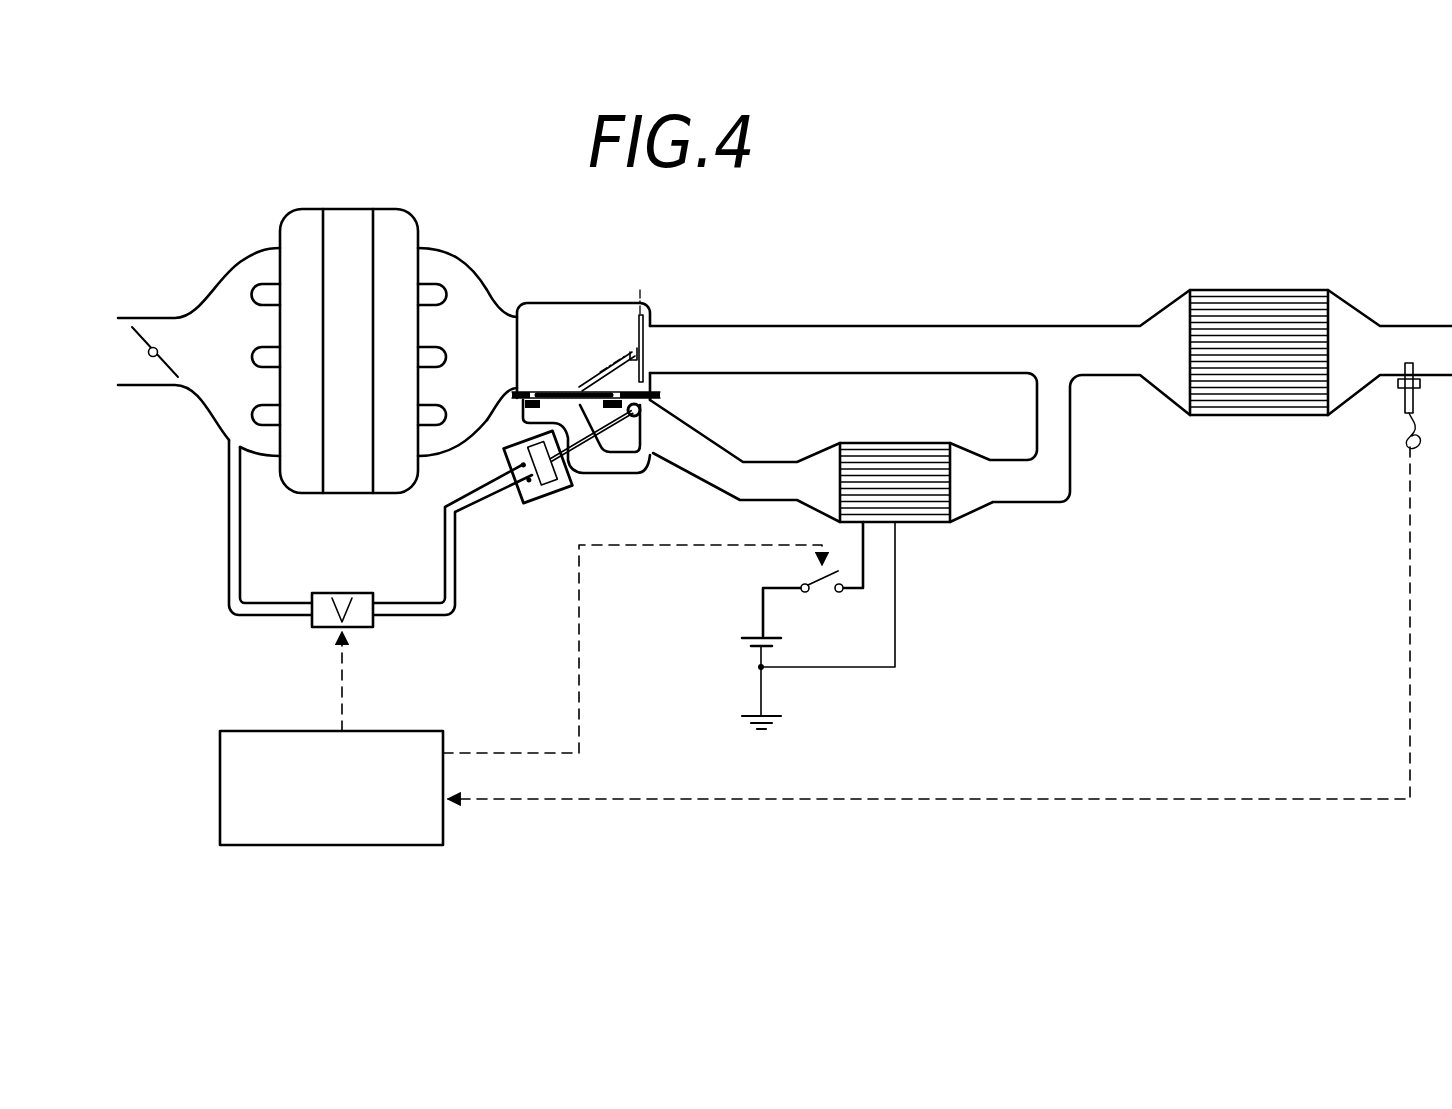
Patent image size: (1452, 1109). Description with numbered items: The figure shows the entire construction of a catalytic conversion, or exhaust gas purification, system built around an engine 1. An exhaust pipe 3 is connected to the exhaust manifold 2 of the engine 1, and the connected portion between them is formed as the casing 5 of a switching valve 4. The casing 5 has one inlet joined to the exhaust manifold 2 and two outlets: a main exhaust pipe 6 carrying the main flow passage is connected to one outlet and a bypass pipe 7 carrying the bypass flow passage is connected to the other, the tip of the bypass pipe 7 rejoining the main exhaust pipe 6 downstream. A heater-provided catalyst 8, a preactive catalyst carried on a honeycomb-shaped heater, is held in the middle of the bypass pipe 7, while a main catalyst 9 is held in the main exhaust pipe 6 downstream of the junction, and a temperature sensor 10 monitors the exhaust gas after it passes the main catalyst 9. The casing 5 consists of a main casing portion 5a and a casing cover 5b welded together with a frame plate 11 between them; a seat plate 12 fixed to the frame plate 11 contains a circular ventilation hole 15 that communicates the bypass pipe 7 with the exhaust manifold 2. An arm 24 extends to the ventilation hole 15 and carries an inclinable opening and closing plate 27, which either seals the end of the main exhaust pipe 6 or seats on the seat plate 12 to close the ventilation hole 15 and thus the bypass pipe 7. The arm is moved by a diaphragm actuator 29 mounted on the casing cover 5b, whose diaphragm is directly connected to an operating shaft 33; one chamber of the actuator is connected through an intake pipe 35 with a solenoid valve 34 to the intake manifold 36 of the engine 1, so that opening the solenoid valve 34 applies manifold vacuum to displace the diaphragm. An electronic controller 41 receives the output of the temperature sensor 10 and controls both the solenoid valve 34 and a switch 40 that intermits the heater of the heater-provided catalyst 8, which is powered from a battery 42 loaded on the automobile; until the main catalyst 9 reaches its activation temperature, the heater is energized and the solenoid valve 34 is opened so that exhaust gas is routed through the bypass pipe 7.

The engine 1 is at (360, 209).
The exhaust manifold 2 is at (467, 347).
The exhaust pipe 3 is at (1051, 397).
The switching valve 4 is at (606, 399).
The casing 5 is at (583, 372).
The main casing portion 5a is at (540, 302).
The casing cover 5b is at (620, 474).
The main exhaust pipe 6 is at (838, 326).
The bypass pipe 7 is at (782, 460).
The heater-provided catalyst 8 is at (950, 510).
The main catalyst 9 is at (1190, 405).
The temperature sensor 10 is at (1413, 365).
The frame plate 11 is at (660, 395).
The seat plate 12 is at (510, 432).
The ventilation hole 15 is at (545, 393).
The arm 24 is at (605, 358).
The opening and closing plate 27 is at (634, 303).
The diaphragm actuator 29 is at (556, 504).
The operating shaft 33 is at (588, 475).
The solenoid valve 34 is at (370, 630).
The intake pipe 35 is at (457, 578).
The intake manifold 36 is at (222, 272).
The switch 40 is at (824, 597).
The electronic controller 41 is at (345, 847).
The battery 42 is at (745, 646).